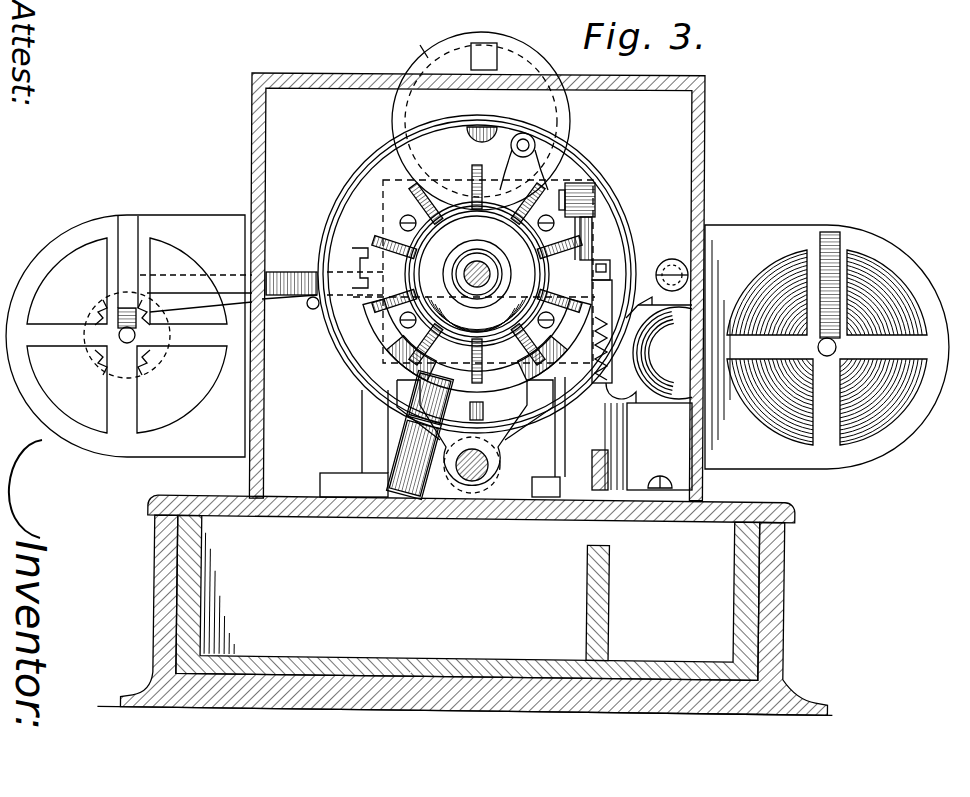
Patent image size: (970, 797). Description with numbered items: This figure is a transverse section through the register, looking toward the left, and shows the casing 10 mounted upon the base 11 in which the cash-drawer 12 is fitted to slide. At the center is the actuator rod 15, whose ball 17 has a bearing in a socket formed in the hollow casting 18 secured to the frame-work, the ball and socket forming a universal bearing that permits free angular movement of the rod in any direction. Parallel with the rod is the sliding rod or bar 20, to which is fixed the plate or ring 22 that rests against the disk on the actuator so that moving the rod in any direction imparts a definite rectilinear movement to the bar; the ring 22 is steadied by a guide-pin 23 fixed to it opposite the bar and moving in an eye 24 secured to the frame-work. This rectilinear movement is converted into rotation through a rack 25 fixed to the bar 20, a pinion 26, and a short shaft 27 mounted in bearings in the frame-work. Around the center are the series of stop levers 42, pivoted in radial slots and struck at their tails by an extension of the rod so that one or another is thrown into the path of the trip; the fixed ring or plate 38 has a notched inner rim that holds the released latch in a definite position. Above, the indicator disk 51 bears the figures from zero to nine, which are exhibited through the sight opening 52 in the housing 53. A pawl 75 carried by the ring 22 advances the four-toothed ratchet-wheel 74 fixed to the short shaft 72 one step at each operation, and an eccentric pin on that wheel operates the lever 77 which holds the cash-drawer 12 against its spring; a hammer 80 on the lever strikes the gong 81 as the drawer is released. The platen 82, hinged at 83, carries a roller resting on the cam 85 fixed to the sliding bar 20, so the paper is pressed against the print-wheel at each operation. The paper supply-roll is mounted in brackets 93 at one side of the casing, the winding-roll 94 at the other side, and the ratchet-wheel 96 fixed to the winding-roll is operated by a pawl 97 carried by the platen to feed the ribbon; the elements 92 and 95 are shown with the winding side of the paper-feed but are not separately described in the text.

The casing 10 is at (252, 155).
The base 11 is at (155, 538).
The cash-drawer 12 is at (432, 660).
The rod 15 is at (492, 264).
The ball 17 is at (477, 260).
The hollow casting 18 is at (477, 274).
The sliding rod or bar 20 is at (490, 465).
The plate or ring 22 is at (362, 172).
The guide-pin 23 is at (527, 145).
The eye 24 is at (524, 170).
The rack 25 is at (428, 463).
The pinion 26 is at (428, 440).
The short shaft 27 is at (397, 398).
The ring or plate 38 is at (384, 193).
The levers 42 is at (480, 180).
The disk 51 is at (475, 121).
The sight opening 52 is at (497, 55).
The housing 53 is at (422, 57).
The short shaft 72 is at (612, 282).
The ratchet-wheel 74 is at (597, 252).
The pawl 75 is at (597, 200).
The lever 77 is at (604, 452).
The hammer 80 is at (636, 393).
The gong 81 is at (675, 348).
The platen 82 is at (310, 307).
The hinge 83 is at (676, 260).
The cam 85 is at (484, 410).
The spring 92 is at (862, 262).
The brackets 93 is at (827, 347).
The winding-roll 94 is at (122, 340).
The wheel 95 is at (125, 336).
The ratchet-wheel 96 is at (100, 318).
The pawl 97 is at (284, 282).